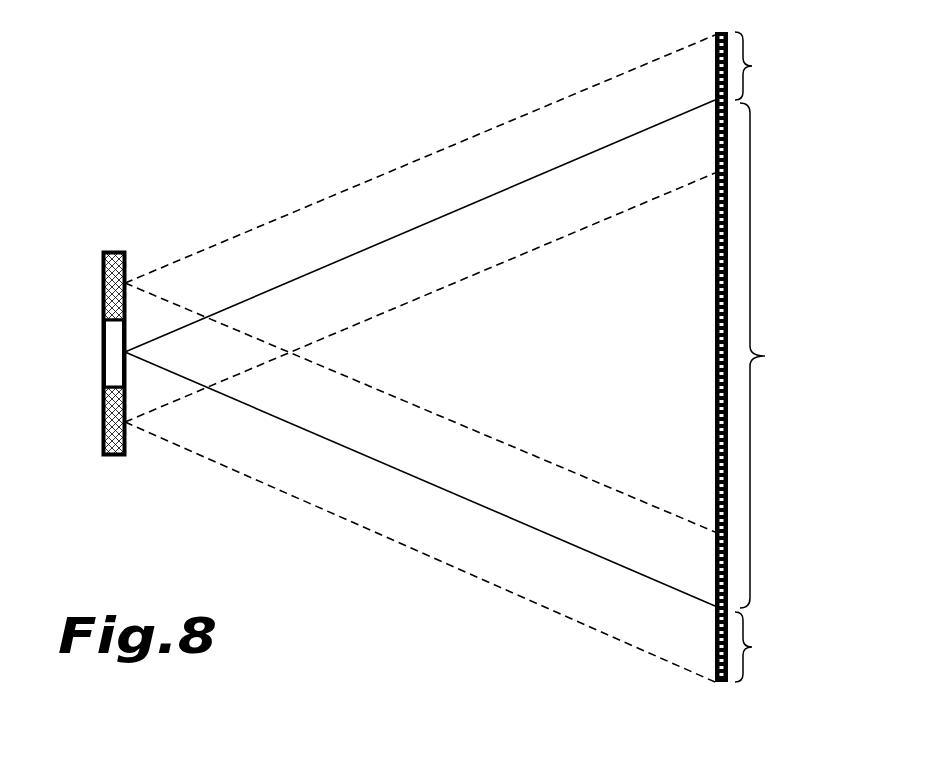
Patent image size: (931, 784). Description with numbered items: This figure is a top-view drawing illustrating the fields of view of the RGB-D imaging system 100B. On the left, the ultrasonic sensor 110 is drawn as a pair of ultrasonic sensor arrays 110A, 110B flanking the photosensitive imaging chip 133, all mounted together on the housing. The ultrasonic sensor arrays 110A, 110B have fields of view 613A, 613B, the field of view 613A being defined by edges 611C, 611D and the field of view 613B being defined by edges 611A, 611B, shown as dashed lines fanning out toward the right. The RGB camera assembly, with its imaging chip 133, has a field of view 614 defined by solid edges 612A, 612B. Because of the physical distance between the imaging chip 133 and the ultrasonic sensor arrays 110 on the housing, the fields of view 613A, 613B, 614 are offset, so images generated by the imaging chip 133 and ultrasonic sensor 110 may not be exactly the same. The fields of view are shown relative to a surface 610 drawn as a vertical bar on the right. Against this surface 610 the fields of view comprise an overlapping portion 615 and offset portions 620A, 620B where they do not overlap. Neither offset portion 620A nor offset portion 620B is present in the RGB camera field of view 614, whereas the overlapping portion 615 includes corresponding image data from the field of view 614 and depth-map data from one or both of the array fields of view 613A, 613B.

The RGB-D imaging system 100B is at (155, 185).
The ultrasonic sensor 110 is at (100, 262).
The ultrasonic sensor array 110A is at (100, 395).
The ultrasonic sensor array 110B is at (100, 310).
The photosensitive imaging chip 133 is at (100, 350).
The surface 610 is at (710, 355).
The edge 611A is at (415, 158).
The edge 611B is at (440, 418).
The edge 611C is at (435, 295).
The edge 611D is at (400, 553).
The edge 612A is at (445, 215).
The edge 612B is at (405, 475).
The field of view 613A is at (272, 512).
The field of view 613B is at (258, 200).
The field of view 614 is at (598, 560).
The overlapping portion 615 is at (770, 355).
The offset portion 620A is at (767, 66).
The offset portion 620B is at (767, 647).